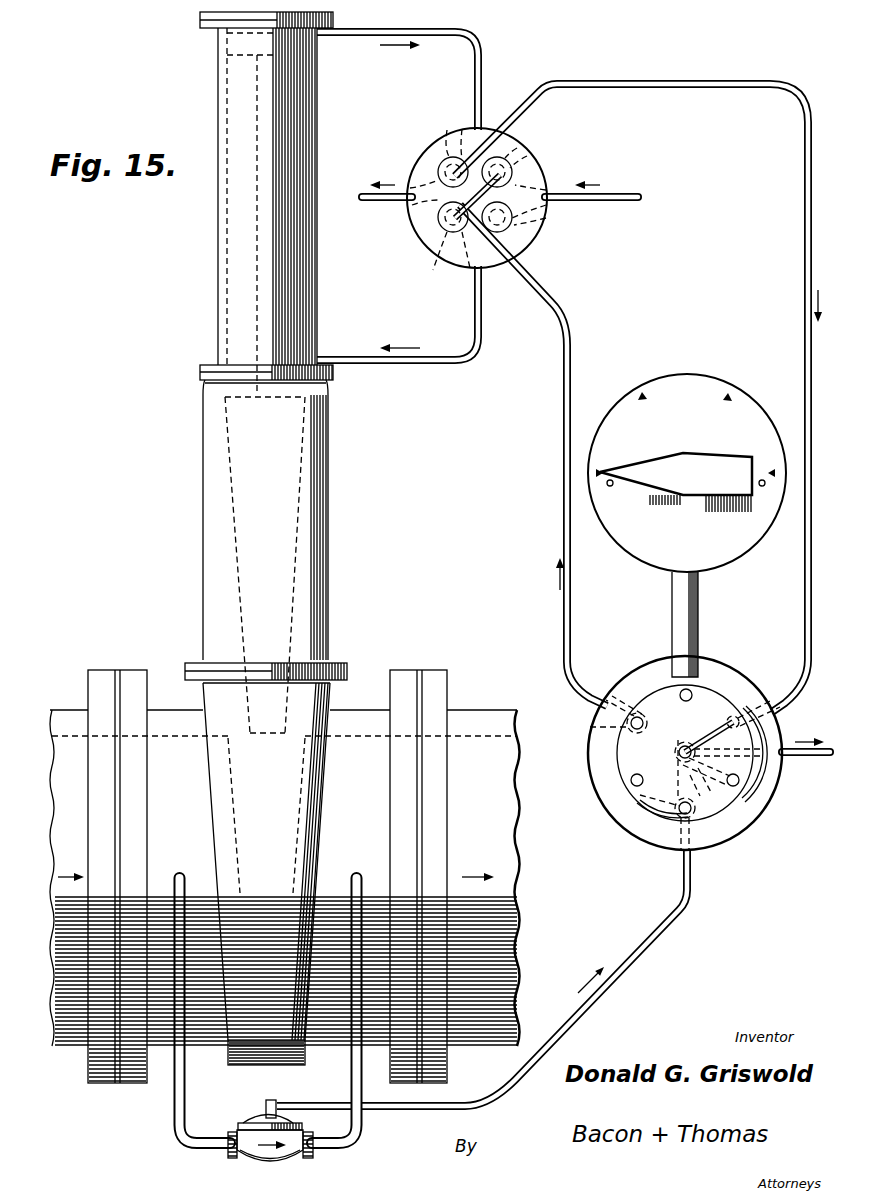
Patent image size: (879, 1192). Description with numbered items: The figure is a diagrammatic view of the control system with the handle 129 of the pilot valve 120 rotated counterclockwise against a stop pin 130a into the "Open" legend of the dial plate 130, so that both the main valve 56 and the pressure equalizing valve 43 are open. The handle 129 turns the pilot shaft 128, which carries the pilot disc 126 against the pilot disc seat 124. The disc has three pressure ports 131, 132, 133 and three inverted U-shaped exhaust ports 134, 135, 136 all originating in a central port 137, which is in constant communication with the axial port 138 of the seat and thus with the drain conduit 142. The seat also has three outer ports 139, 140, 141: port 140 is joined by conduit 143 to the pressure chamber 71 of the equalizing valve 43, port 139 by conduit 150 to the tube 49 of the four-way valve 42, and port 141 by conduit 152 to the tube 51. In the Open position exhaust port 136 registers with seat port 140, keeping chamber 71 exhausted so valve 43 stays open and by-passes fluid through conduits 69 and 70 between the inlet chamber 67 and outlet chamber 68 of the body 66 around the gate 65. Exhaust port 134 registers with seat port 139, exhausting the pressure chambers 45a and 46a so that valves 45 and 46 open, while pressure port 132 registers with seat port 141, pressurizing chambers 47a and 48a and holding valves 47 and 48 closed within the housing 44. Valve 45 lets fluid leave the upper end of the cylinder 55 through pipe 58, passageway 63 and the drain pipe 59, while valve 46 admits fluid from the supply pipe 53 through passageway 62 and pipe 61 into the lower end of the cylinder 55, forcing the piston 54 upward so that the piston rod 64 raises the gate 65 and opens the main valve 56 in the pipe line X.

The four-way valve 42 is at (530, 246).
The pressure equalizing valve 43 is at (243, 1160).
The housing 44 is at (498, 270).
The pressure fluid operable valve 45 is at (468, 127).
The pressure chamber 45a is at (438, 171).
The pressure fluid operable valve 46 is at (520, 224).
The pressure chamber 46a is at (512, 232).
The pressure fluid operable valve 47 is at (530, 142).
The pressure chamber 47a is at (512, 166).
The pressure fluid operable valve 48 is at (442, 258).
The pressure chamber 48a is at (445, 230).
The tube 49 is at (448, 168).
The tube 51 is at (508, 178).
The operating fluid supply pipe 53 is at (632, 193).
The piston 54 is at (318, 60).
The cylinder 55 is at (318, 236).
The main valve 56 is at (332, 458).
The pipe 58 is at (482, 42).
The drain pipe 59 is at (372, 202).
The pipe 61 is at (428, 364).
The passageway 62 is at (556, 206).
The passageway 63 is at (410, 204).
The piston rod 64 is at (300, 300).
The gate 65 is at (300, 532).
The body 66 is at (360, 710).
The inlet chamber 67 is at (175, 738).
The outlet chamber 68 is at (355, 738).
The conduit 69 is at (174, 1100).
The conduit 70 is at (365, 1138).
The pressure chamber 71 is at (265, 1116).
The pipe line X is at (488, 712).
The pilot valve 120 is at (665, 648).
The pilot disc seat 124 is at (745, 676).
The pilot disc 126 is at (650, 690).
The pilot shaft 128 is at (700, 604).
The handle 129 is at (689, 452).
The dial plate 130 is at (690, 374).
The pins 130a is at (760, 487).
The pressure port 131 is at (630, 781).
The pressure port 132 is at (631, 718).
The pressure port 133 is at (690, 690).
The exhaust port 134 is at (712, 735).
The exhaust port 135 is at (720, 786).
The exhaust port 136 is at (680, 805).
The port 137 is at (677, 740).
The axial port 138 is at (674, 752).
The seat port 139 is at (745, 722).
The seat port 140 is at (698, 815).
The seat port 141 is at (590, 727).
The drain conduit 142 is at (808, 758).
The conduit 143 is at (628, 972).
The conduit 150 is at (806, 279).
The conduit 152 is at (564, 410).